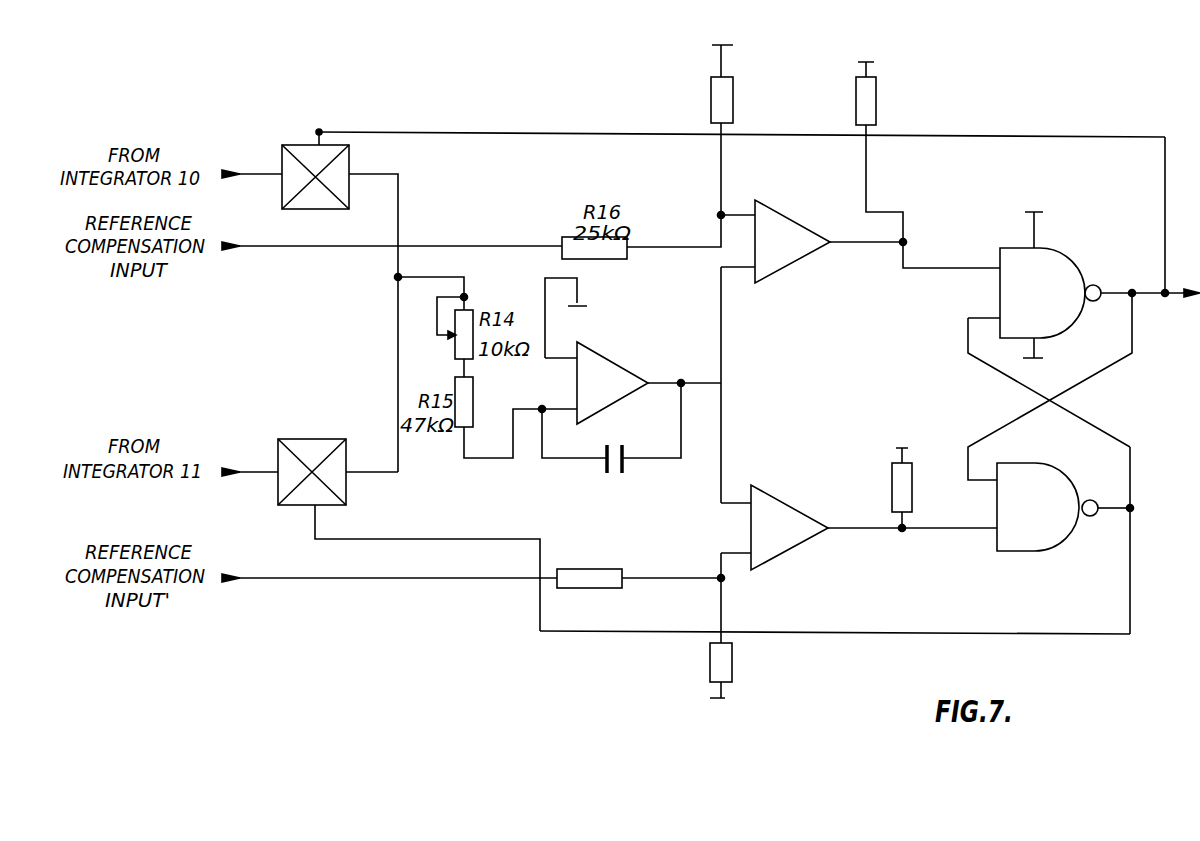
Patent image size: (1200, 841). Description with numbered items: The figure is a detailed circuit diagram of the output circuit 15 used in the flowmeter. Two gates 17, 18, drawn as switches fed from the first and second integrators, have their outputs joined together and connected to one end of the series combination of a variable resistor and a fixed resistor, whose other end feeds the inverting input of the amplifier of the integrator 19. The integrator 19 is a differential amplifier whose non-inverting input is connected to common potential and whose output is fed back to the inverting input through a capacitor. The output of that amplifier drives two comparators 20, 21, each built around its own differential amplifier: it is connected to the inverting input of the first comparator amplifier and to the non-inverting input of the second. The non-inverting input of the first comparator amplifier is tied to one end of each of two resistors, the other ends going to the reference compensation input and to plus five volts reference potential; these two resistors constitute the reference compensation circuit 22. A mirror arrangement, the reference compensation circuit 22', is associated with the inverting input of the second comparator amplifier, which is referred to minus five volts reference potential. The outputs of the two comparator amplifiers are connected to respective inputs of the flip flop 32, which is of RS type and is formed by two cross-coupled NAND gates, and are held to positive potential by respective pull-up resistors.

The output circuit 15 is at (1087, 82).
The gate 17 is at (282, 160).
The gate 18 is at (328, 437).
The integrator 19 is at (643, 311).
The comparator 20 is at (797, 199).
The comparator 21 is at (789, 493).
The reference compensation circuit 22 is at (742, 126).
The reference compensation circuit 22' is at (684, 632).
The flip flop 32 is at (1127, 396).